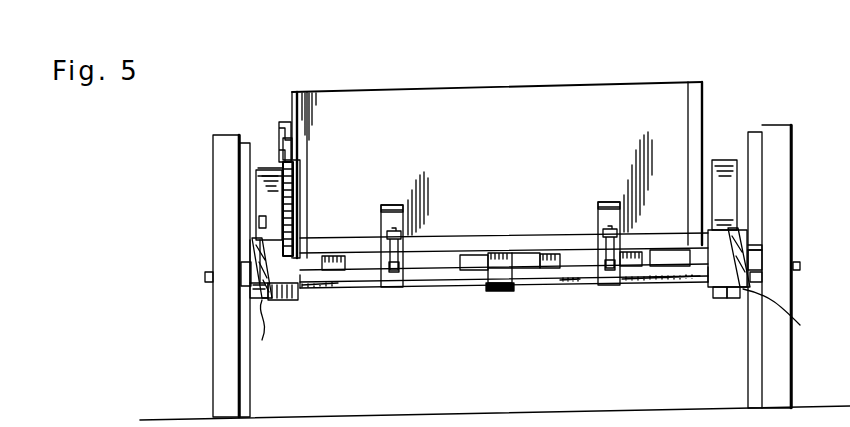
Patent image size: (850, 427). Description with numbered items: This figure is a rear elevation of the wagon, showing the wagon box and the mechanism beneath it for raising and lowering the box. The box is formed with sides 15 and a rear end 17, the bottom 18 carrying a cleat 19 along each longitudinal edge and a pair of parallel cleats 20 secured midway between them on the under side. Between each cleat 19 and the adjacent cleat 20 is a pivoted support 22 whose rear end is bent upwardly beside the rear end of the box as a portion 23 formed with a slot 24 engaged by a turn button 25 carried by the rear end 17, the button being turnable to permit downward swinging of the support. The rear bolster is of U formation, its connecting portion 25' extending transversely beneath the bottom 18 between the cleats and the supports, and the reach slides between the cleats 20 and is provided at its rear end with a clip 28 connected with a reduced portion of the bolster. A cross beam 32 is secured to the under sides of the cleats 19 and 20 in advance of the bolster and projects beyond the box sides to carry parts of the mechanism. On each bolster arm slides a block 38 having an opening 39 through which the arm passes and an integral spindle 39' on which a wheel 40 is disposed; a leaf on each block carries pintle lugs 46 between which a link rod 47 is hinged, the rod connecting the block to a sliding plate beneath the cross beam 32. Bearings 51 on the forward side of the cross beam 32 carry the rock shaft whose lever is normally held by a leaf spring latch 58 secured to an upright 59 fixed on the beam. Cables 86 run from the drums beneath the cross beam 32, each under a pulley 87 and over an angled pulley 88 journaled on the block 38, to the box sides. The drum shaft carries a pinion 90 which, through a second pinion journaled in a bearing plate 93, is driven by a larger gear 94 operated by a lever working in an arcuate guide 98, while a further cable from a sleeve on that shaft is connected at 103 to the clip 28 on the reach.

The sides 15 is at (298, 92).
The rear end 17 is at (482, 88).
The bottom 18 is at (518, 240).
The cleat 19 is at (310, 258).
The cleats 20 is at (475, 262).
The support 22 is at (393, 288).
The upwardly bent rear end portion 23 is at (390, 205).
The slot 24 is at (397, 234).
The turn button 25 is at (489, 243).
The connecting portion 25' is at (559, 287).
The clip 28 is at (508, 288).
The cross beam 32 is at (763, 254).
The block 38 is at (252, 252).
The opening 39 is at (272, 307).
The spindle 39' is at (506, 285).
The wheel 40 is at (220, 362).
The pintle lugs 46 is at (716, 298).
The link rod 47 is at (727, 298).
The bearings 51 is at (257, 190).
The leaf spring latch 58 is at (260, 222).
The upright 59 is at (266, 168).
The cables 86 is at (242, 292).
The pulley 87 is at (540, 327).
The pulley 88 is at (298, 222).
The pinion 90 is at (298, 300).
The bearing plate 93 is at (292, 150).
The gear 94 is at (293, 178).
The arcuate guide 98 is at (284, 122).
The cable connection 103 is at (496, 292).